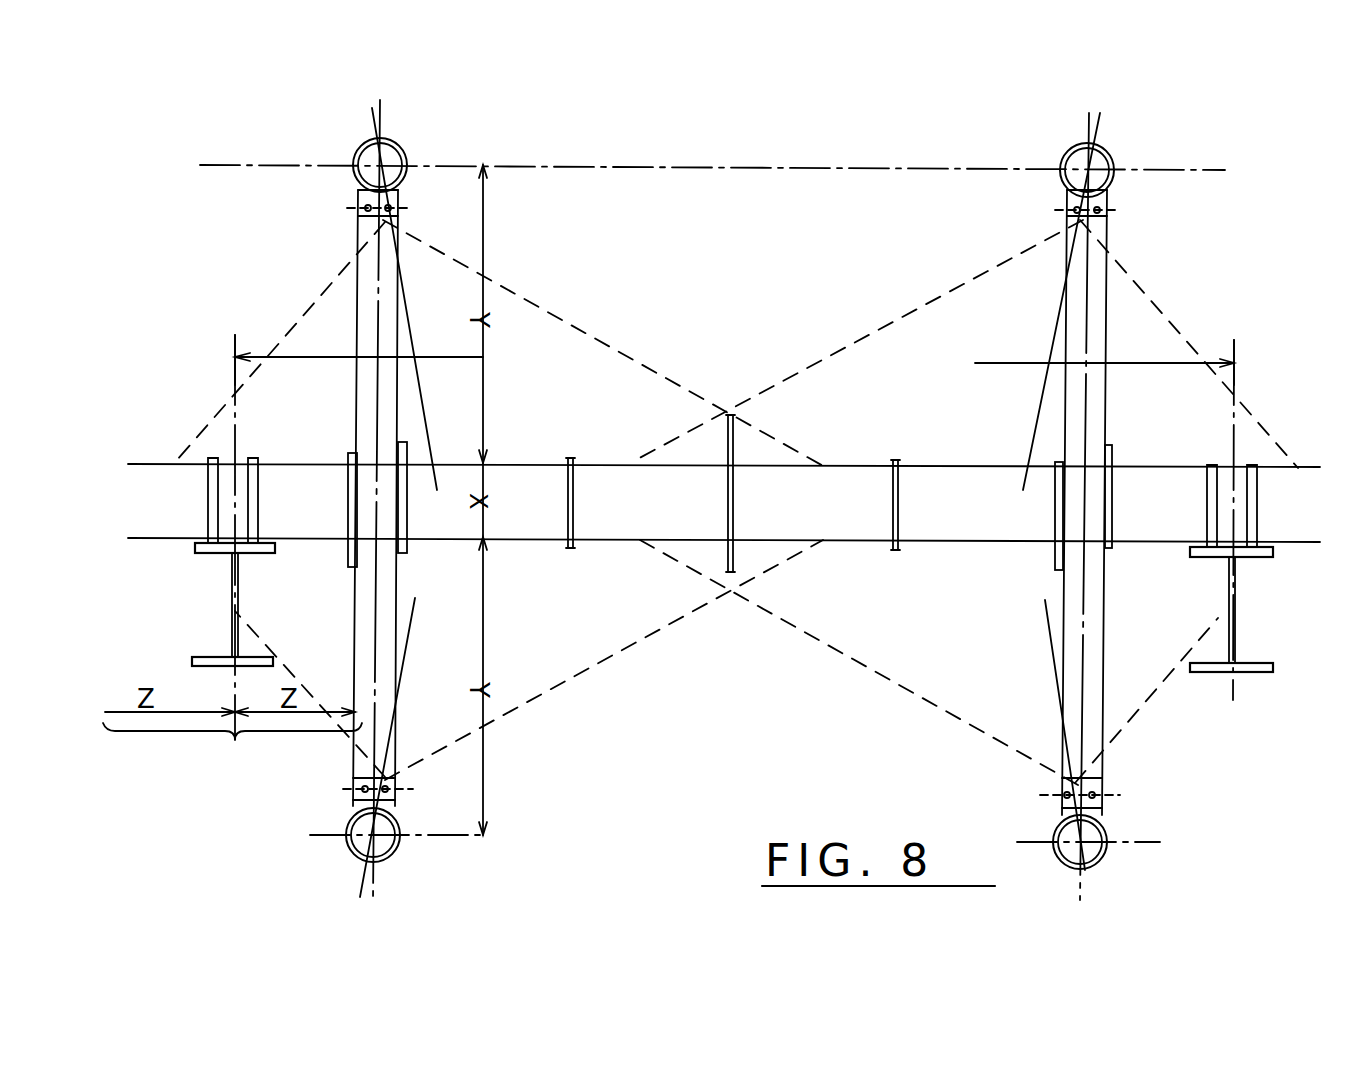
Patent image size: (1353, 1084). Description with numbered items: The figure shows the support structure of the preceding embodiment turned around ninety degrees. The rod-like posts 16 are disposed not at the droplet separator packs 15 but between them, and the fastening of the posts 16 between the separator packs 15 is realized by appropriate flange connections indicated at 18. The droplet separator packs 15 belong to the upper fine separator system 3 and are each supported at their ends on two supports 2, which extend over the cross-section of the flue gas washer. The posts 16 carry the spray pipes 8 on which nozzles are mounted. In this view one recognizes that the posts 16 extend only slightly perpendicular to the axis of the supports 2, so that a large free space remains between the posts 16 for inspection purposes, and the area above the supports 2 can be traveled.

The spray pipe 8 is at (393, 157).
The rod-like post 16 is at (392, 384).
The flange connection 18 is at (347, 510).
The droplet separator pack 15 is at (838, 480).
The upper fine separator system 3 is at (715, 538).
The support 2 is at (232, 597).